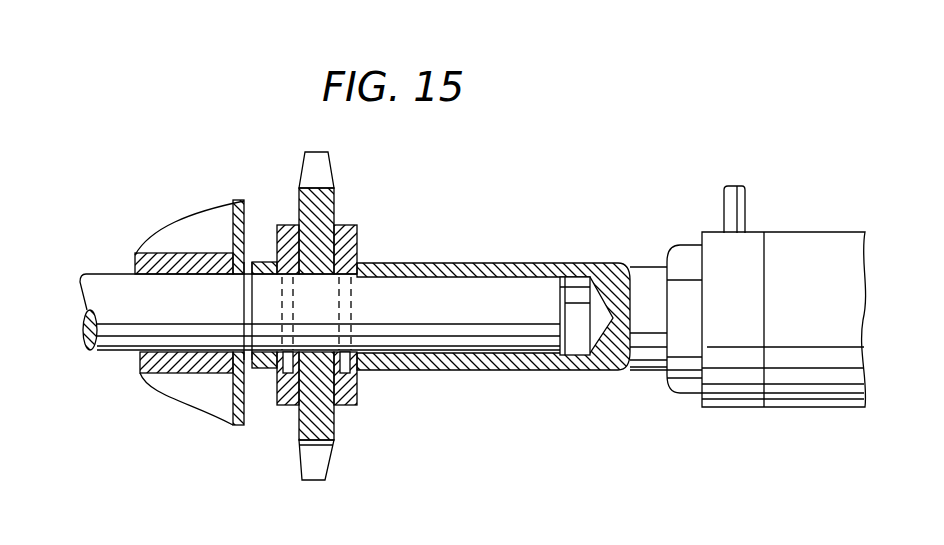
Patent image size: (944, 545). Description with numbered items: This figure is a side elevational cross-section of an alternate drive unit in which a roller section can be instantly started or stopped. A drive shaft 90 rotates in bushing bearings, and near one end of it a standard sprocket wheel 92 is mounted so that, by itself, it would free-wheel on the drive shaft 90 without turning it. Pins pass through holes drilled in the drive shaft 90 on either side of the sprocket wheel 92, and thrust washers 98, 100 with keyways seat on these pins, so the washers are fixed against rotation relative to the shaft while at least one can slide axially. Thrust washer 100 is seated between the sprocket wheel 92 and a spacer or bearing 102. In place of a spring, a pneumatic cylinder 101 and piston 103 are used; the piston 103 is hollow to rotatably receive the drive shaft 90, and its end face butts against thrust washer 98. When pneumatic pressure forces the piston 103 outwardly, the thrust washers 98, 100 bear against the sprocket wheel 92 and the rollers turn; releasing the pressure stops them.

The drive shaft 90 is at (435, 315).
The sprocket wheel 92 is at (322, 197).
The thrust washer 98 is at (345, 227).
The thrust washer 100 is at (290, 223).
The pneumatic cylinder 101 is at (810, 240).
The spacer or bearing 102 is at (261, 257).
The piston 103 is at (643, 273).